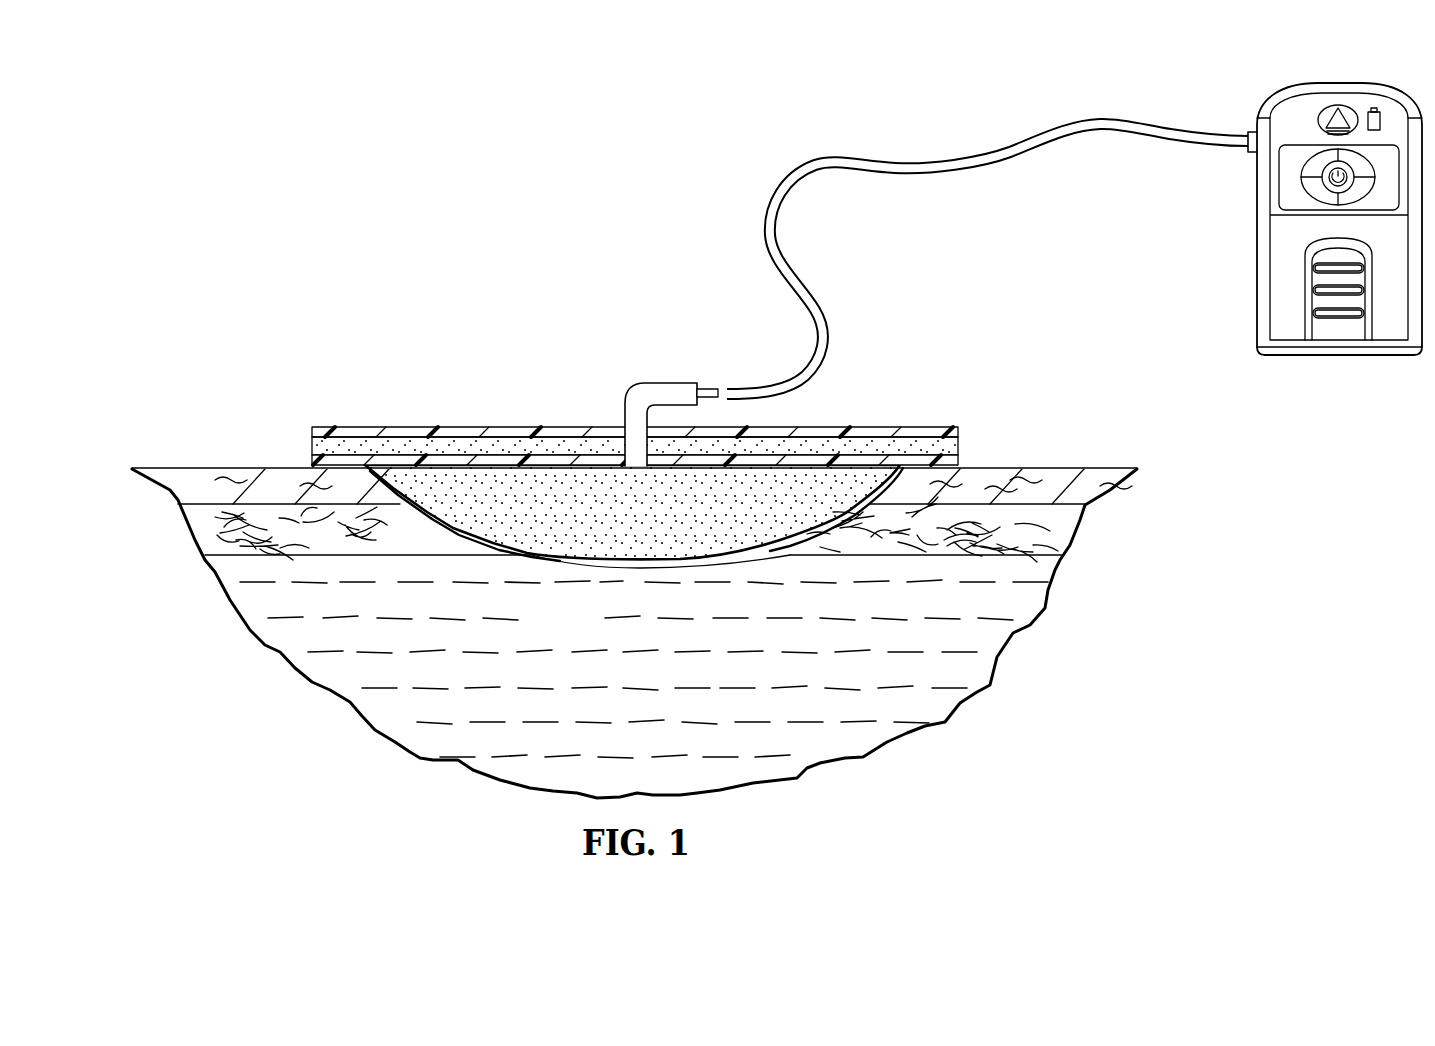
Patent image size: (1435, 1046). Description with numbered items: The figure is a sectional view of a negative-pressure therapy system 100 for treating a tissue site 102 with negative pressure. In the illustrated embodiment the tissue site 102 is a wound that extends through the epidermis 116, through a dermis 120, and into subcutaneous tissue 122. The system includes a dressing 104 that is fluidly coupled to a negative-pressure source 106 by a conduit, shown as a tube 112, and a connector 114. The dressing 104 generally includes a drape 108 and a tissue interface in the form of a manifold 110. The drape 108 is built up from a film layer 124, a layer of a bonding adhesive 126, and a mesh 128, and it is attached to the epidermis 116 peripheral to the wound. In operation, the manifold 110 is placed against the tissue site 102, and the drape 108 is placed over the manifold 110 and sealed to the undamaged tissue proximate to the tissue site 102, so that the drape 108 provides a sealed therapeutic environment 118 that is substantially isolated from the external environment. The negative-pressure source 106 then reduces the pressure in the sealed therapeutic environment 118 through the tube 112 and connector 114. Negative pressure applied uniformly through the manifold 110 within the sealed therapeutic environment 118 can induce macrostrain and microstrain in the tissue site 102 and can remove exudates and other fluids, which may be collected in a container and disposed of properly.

The negative-pressure therapy system 100 is at (563, 262).
The tissue site 102 is at (583, 576).
The dressing 104 is at (862, 407).
The negative-pressure source 106 is at (1256, 288).
The drape 108 is at (669, 416).
The manifold 110 is at (660, 528).
The tube 112 is at (768, 212).
The connector 114 is at (633, 387).
The epidermis 116 is at (1104, 483).
The sealed therapeutic environment 118 is at (888, 482).
The dermis 120 is at (205, 532).
The subcutaneous tissue 122 is at (1003, 658).
The film layer 124 is at (455, 430).
The bonding adhesive 126 is at (323, 444).
The mesh 128 is at (950, 460).